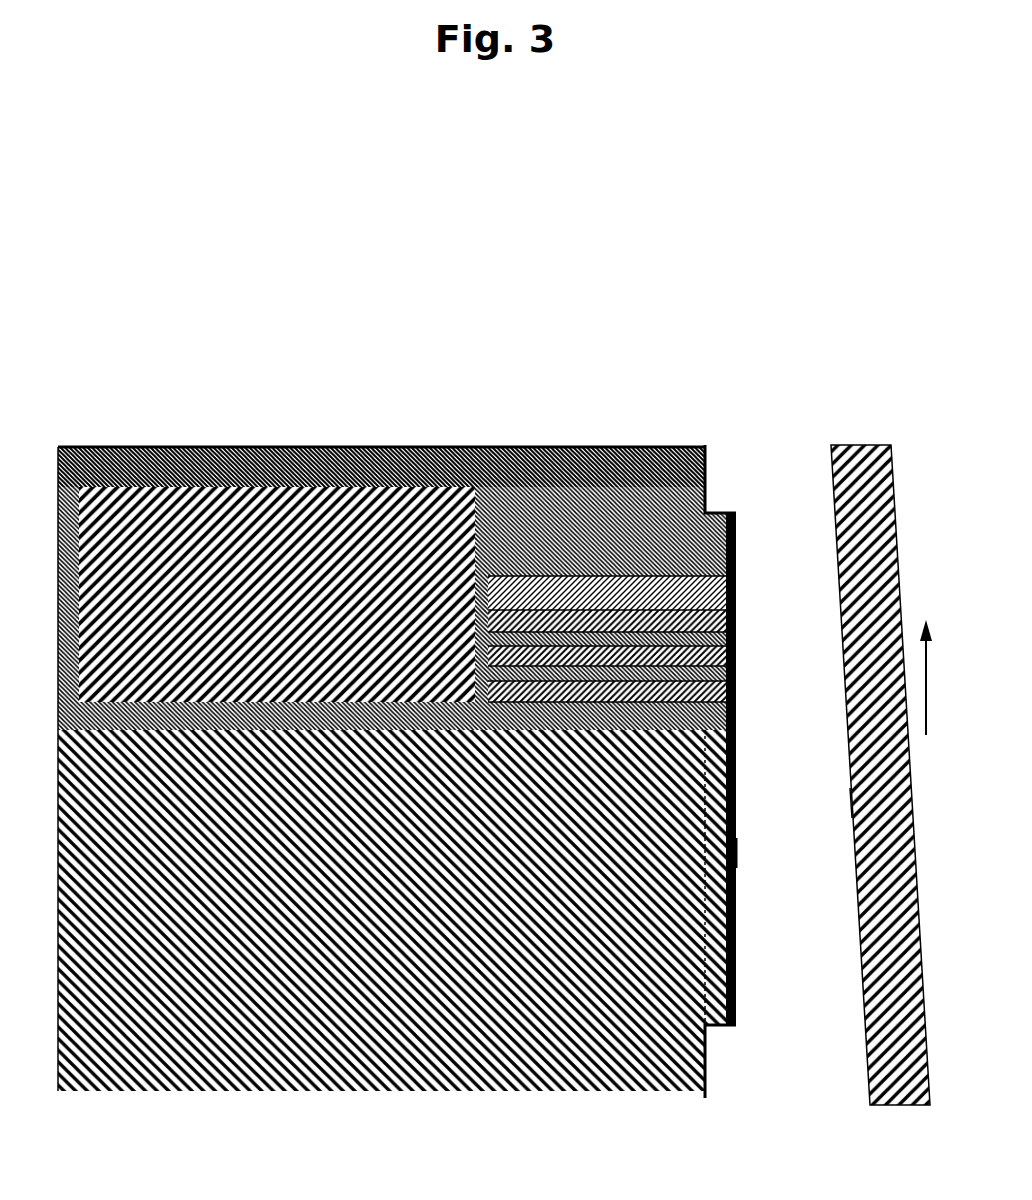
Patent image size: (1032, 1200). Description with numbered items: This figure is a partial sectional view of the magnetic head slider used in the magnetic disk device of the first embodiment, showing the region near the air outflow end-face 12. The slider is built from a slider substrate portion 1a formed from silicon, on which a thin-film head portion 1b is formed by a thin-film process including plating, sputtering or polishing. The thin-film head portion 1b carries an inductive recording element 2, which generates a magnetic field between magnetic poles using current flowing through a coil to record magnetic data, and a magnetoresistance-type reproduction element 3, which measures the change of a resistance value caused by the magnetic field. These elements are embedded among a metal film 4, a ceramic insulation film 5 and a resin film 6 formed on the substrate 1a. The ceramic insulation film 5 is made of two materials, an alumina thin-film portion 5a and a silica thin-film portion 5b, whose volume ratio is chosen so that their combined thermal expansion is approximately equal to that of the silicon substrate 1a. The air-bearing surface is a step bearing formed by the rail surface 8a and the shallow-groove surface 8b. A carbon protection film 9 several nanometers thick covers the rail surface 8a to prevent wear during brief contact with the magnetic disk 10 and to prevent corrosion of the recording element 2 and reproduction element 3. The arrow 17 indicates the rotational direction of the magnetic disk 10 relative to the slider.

The slider substrate portion 1a is at (157, 1043).
The thin-film head portion 1b is at (198, 440).
The air outflow end-face 12 is at (128, 440).
The ceramic insulation film 5 is at (381, 377).
The alumina thin-film portion 5a is at (297, 440).
The silica thin-film portion 5b is at (381, 408).
The metal film 4 is at (603, 582).
The resin film 6 is at (620, 560).
The inductive recording element 2 is at (730, 577).
The magnetoresistance-type reproduction element 3 is at (732, 657).
The rail surface 8a is at (730, 790).
The shallow-groove surface 8b is at (700, 470).
The carbon protection film 9 is at (732, 840).
The magnetic disk 10 is at (842, 795).
The rotational direction of the magnetic disk 17 is at (920, 665).